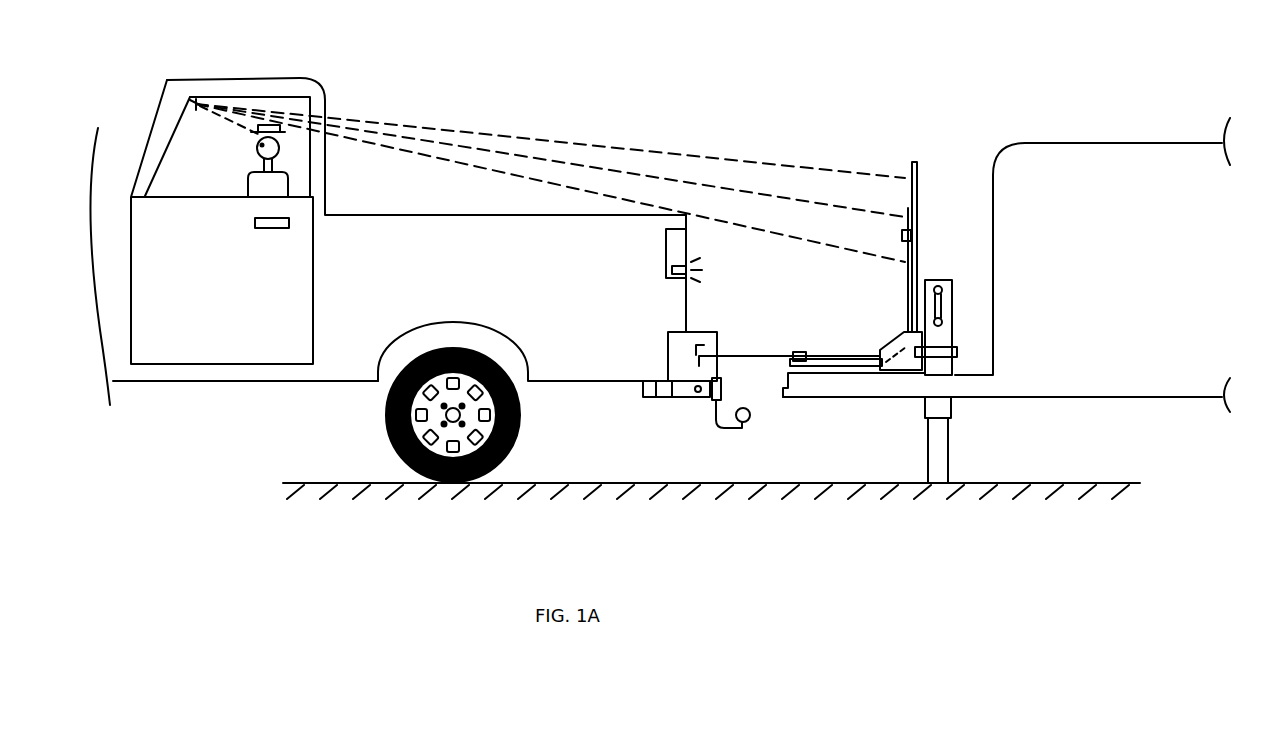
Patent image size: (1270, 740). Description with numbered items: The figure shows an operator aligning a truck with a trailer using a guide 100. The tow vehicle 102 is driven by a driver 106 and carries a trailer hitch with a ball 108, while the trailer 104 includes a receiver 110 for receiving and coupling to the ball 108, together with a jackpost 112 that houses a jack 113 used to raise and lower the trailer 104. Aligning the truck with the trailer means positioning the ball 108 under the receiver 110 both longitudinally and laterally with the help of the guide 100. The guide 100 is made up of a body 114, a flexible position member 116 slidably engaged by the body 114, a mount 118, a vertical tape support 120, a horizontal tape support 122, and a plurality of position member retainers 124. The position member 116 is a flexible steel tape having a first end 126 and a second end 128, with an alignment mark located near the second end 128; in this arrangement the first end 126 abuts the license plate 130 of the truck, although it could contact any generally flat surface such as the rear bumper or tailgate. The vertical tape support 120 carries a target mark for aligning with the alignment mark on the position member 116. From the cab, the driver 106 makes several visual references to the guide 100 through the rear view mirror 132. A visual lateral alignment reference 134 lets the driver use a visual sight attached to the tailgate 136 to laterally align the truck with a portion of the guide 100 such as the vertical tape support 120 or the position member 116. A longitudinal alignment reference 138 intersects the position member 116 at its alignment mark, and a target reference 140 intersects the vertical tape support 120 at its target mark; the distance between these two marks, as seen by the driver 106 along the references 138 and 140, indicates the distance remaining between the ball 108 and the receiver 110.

The guide 100 is at (853, 132).
The tow vehicle 102 is at (462, 288).
The trailer 104 is at (1149, 276).
The driver 106 is at (246, 182).
The ball 108 is at (750, 420).
The receiver 110 is at (795, 399).
The jackpost 112 is at (952, 305).
The jack 113 is at (951, 450).
The body 114 is at (893, 340).
The flexible position member 116 is at (745, 355).
The mount 118 is at (957, 350).
The vertical tape support 120 is at (918, 185).
The horizontal tape support 122 is at (852, 372).
The position member retainers 124 is at (800, 352).
The first end 126 is at (704, 345).
The second end 128 is at (909, 212).
The license plate 130 is at (690, 382).
The rear view mirror 132 is at (199, 96).
The visual lateral alignment reference 134 is at (446, 140).
The tailgate 136 is at (682, 218).
The longitudinal alignment reference 138 is at (556, 140).
The target reference 140 is at (668, 140).